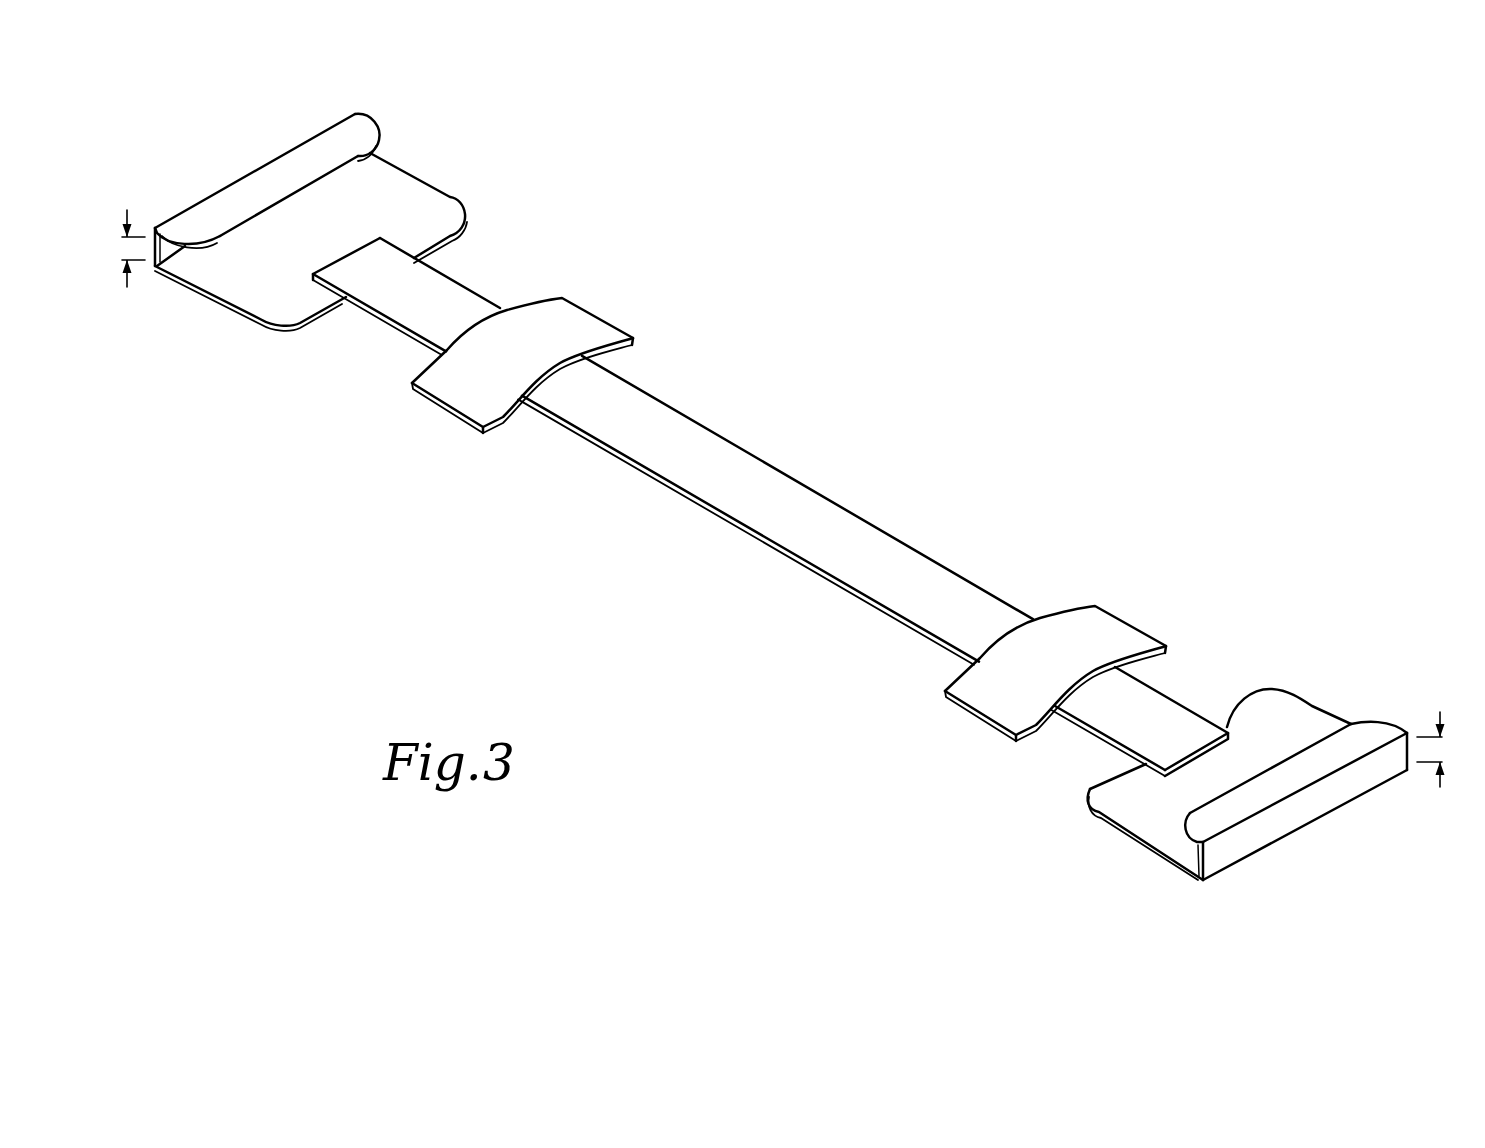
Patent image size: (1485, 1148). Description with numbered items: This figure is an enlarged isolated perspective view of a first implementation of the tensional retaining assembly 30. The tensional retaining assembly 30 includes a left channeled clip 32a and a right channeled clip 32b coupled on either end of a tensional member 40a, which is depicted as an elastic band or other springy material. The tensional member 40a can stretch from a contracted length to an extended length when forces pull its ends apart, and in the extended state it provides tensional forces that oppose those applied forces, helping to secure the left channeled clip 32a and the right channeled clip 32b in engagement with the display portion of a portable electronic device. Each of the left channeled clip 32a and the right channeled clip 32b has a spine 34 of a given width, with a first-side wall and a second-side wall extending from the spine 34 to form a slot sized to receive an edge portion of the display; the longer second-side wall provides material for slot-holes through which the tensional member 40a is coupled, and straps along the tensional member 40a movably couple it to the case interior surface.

The tensional retaining assembly 30 is at (1020, 192).
The left channeled clip 32a is at (430, 137).
The right channeled clip 32b is at (1345, 619).
The spine 34 is at (1297, 813).
The tensional member 40a is at (783, 478).